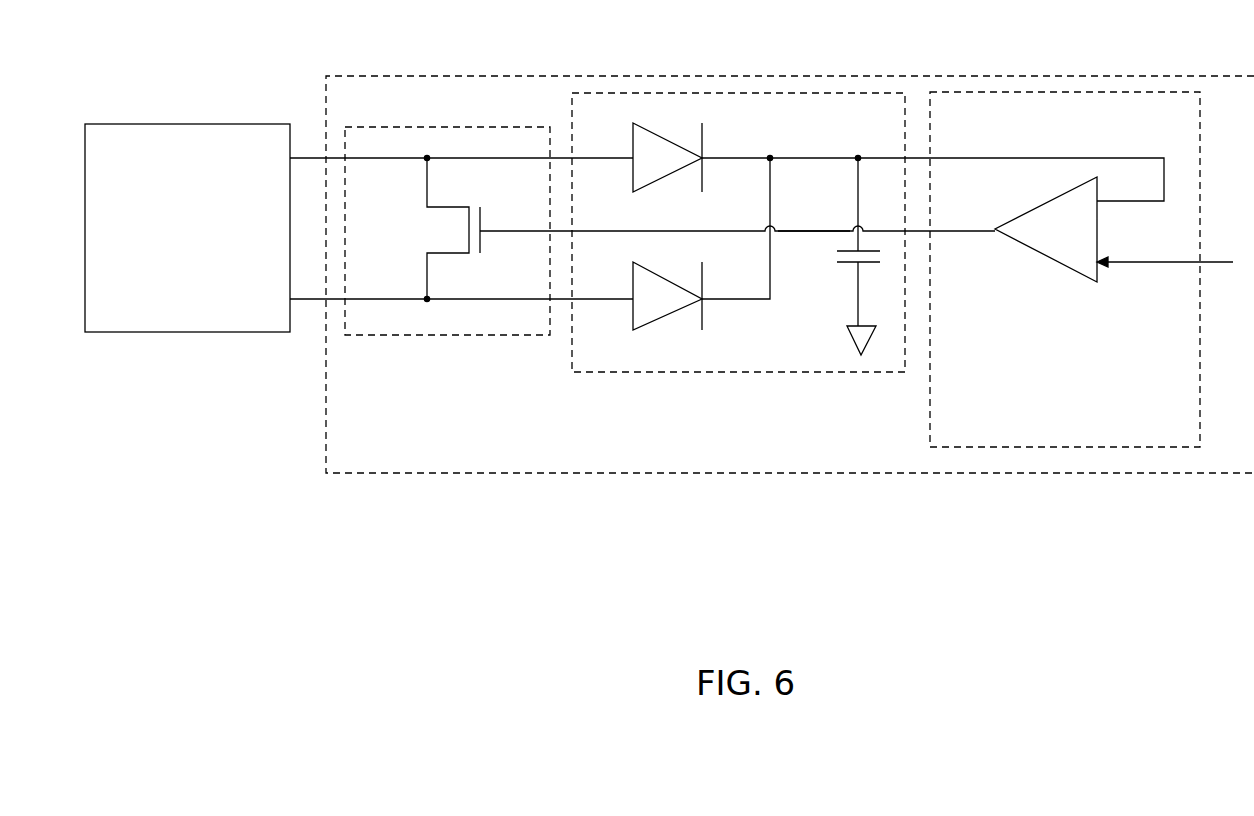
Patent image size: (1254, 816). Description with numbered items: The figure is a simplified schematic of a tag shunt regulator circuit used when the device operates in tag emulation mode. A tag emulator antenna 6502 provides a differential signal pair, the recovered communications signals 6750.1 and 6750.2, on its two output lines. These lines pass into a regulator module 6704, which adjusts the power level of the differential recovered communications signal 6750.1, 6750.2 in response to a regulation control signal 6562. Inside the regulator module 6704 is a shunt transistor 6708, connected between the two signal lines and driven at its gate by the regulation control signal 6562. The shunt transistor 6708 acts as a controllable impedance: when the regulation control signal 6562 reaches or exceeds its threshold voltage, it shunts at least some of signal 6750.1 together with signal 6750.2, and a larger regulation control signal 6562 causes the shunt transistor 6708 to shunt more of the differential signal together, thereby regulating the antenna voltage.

The tag emulator antenna 6502 is at (183, 124).
The differential recovered communications signal 6750.1 is at (300, 158).
The differential recovered communications signal 6750.2 is at (308, 301).
The regulator module 6704 is at (440, 127).
The shunt transistor 6708 is at (462, 207).
The regulation control signal 6562 is at (807, 231).